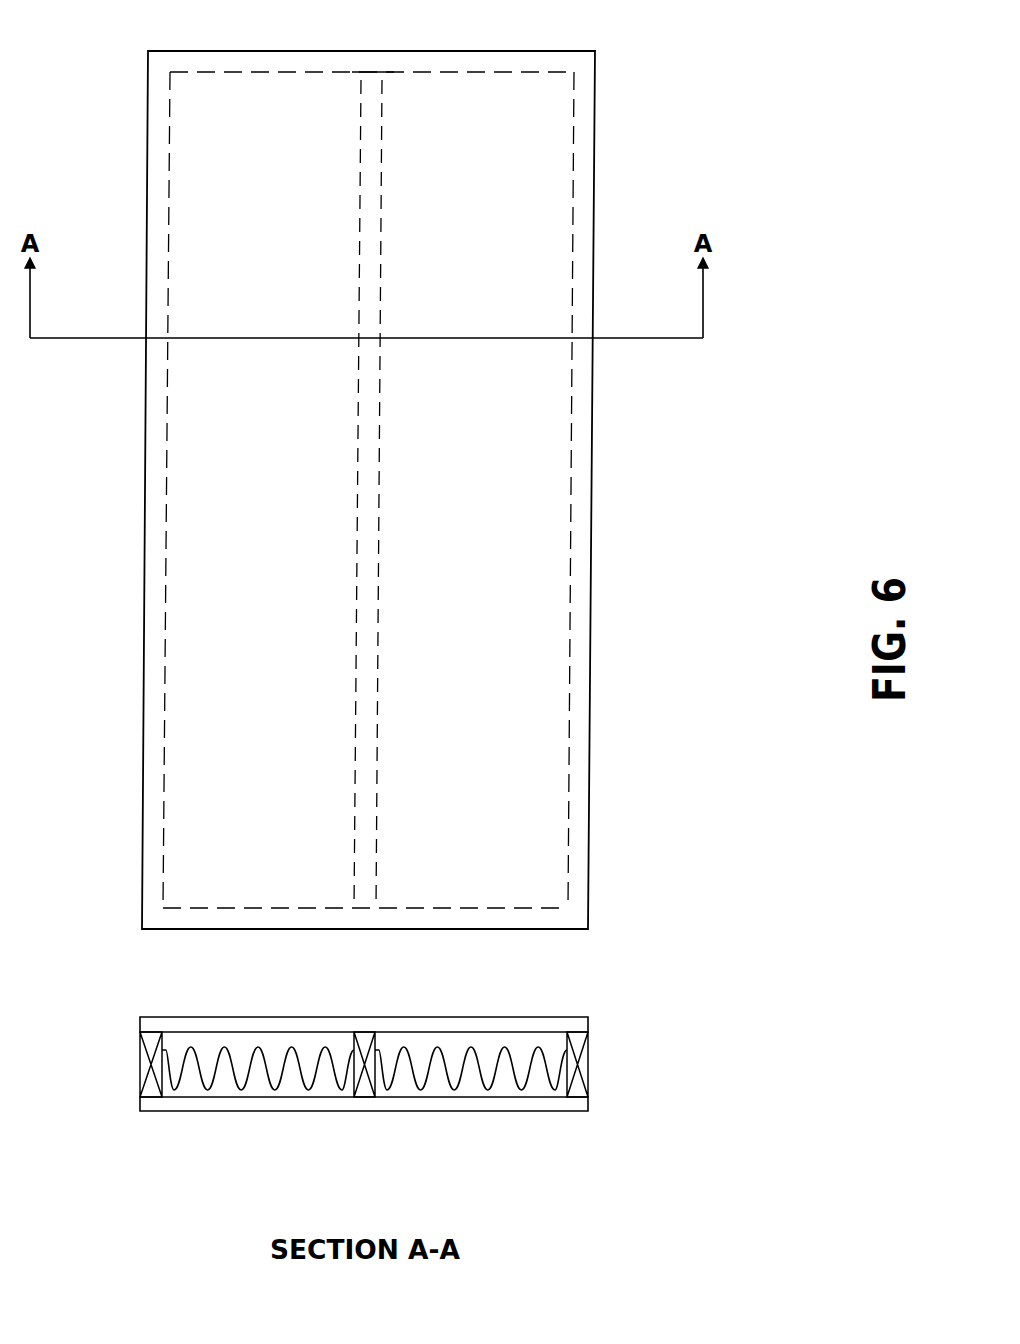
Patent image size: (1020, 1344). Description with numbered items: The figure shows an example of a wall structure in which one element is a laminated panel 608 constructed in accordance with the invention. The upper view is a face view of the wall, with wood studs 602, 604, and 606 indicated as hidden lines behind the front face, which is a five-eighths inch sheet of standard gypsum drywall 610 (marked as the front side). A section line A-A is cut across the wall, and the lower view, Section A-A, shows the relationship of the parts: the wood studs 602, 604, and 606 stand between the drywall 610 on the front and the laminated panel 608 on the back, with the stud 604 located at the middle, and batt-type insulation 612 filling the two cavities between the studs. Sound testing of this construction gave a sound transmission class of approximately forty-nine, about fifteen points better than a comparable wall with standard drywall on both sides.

The wood stud 602 is at (155, 377).
The wood stud 604 is at (372, 112).
The wood stud 606 is at (582, 379).
The laminated panel 608 is at (547, 1103).
The sheet of standard gypsum drywall 610 is at (527, 817).
The batt-type insulation 612 is at (183, 1063).